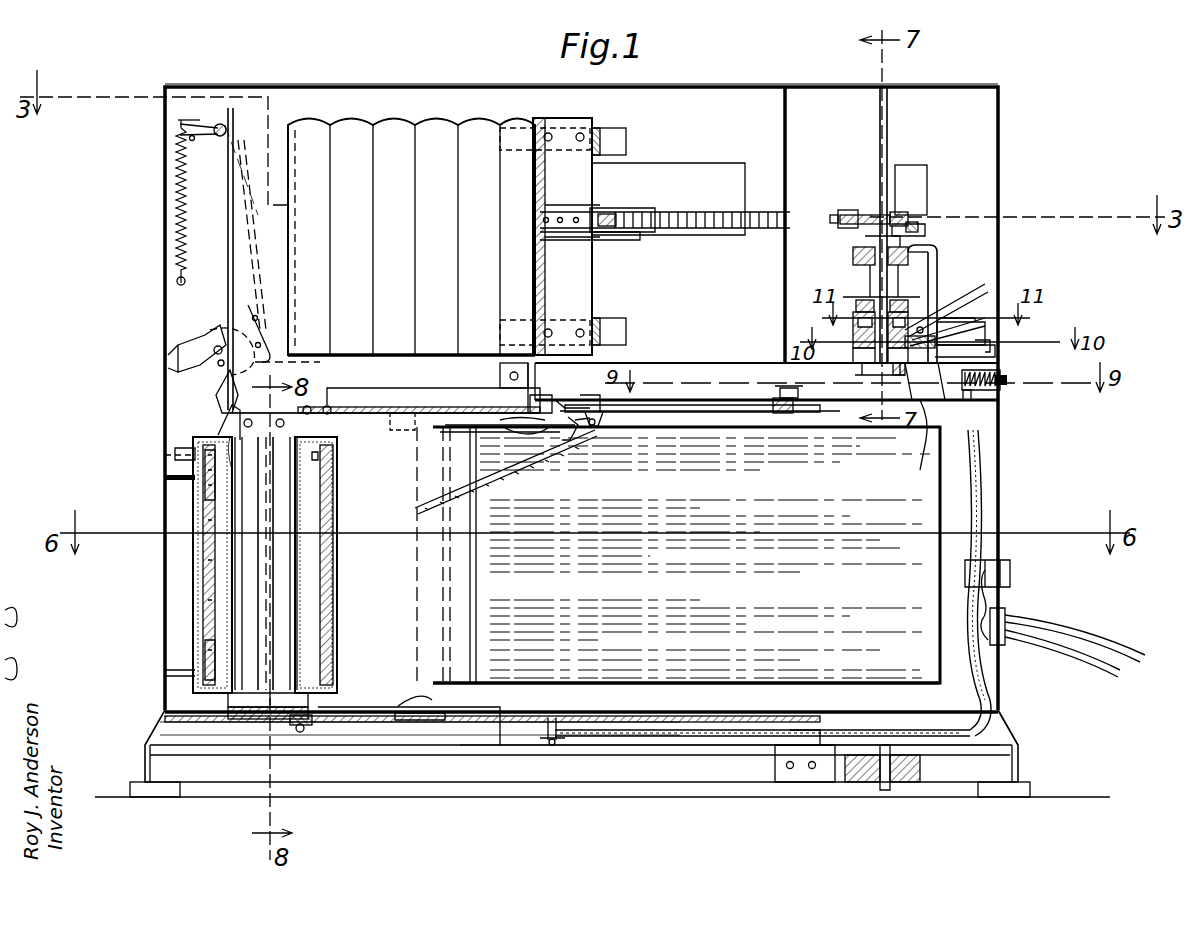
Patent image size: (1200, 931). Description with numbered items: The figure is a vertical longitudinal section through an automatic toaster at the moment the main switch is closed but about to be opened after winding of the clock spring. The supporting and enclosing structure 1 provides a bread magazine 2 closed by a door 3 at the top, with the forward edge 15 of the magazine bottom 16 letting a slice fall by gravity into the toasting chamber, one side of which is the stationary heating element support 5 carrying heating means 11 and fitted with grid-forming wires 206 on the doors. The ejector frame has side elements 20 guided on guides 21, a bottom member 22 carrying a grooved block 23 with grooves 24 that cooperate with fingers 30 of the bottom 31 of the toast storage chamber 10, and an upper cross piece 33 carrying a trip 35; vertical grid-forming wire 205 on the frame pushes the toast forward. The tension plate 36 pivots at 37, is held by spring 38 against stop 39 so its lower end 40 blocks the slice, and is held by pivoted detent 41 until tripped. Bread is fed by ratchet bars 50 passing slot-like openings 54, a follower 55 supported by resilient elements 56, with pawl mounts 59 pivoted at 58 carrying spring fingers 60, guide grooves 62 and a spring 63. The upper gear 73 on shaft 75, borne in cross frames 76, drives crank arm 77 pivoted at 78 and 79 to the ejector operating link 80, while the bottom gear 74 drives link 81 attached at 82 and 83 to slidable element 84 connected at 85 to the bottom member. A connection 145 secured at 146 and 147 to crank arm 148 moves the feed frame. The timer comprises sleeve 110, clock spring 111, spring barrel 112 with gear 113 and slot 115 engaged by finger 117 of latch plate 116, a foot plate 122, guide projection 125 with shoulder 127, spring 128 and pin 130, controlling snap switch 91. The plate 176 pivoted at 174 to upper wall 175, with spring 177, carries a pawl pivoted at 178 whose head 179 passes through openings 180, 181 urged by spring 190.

The supporting and enclosing structure 1 is at (1000, 125).
The magazine 2 is at (712, 97).
The door 3 is at (436, 86).
The stationary heating element support 5 is at (198, 555).
The toast storage chamber 10 is at (700, 675).
The heating means 11 is at (320, 588).
The forward edge 15 is at (282, 352).
The bottom 16 is at (430, 348).
The side elements 20 is at (340, 610).
The guides 21 is at (388, 752).
The bottom member 22 is at (258, 715).
The block 23 is at (282, 693).
The grooves 24 is at (245, 693).
The fingers 30 is at (400, 705).
The bottom of the toast storage chamber 31 is at (578, 680).
The cross piece 33 is at (220, 410).
The trip 35 is at (228, 380).
The tension plate 36 is at (226, 300).
The pivot 37 is at (218, 125).
The spring 38 is at (180, 193).
The stop 39 is at (193, 142).
The lower end 40 is at (293, 365).
The pivoted detent 41 is at (218, 345).
The ratchet bars 50 is at (702, 212).
The slot-like openings 54 is at (722, 238).
The follower 55 is at (582, 290).
The resilient elements 56 is at (626, 140).
The pivot 58 is at (548, 205).
The pawl mounts 59 is at (640, 236).
The spring finger 60 is at (572, 230).
The guide grooves 62 is at (635, 210).
The spring 63 is at (606, 228).
The upper gear 73 is at (826, 405).
The bottom gear 74 is at (985, 740).
The shaft 75 is at (890, 268).
The cross frames 76 is at (855, 258).
The crank arm or link 77 is at (704, 415).
The pivot 78 is at (783, 415).
The pivot 79 is at (530, 400).
The ejector operating link 80 is at (360, 410).
The crank arm or link 81 is at (636, 740).
The attachment point 82 is at (792, 752).
The attachment point 83 is at (550, 745).
The slidably mounted element 84 is at (470, 722).
The connection 85 is at (302, 730).
The snap switch 91 is at (985, 330).
The sleeve 110 is at (855, 354).
The clock spring 111 is at (860, 310).
The spring barrel 112 is at (855, 330).
The gear 113 is at (985, 300).
The vertical slot 115 is at (940, 375).
The latch plate 116 is at (938, 280).
The latch finger 117 is at (990, 358).
The foot plate 122 is at (920, 440).
The guide projection 125 is at (998, 370).
The shoulder 127 is at (966, 440).
The spring 128 is at (1000, 390).
The pin 130 is at (975, 398).
The connection 145 is at (895, 215).
The attachment point 146 is at (846, 228).
The attachment point 147 is at (908, 216).
The crank arm 148 is at (920, 228).
The pivot 174 is at (585, 400).
The upper wall 175 is at (650, 420).
The plate 176 is at (418, 506).
The spring 177 is at (535, 435).
The pivot 178 is at (590, 430).
The head 179 is at (568, 440).
The opening 180 is at (480, 410).
The opening 181 is at (404, 409).
The spring 190 is at (520, 428).
The grid-forming wire 205 is at (210, 575).
The grid-forming wires 206 is at (300, 502).